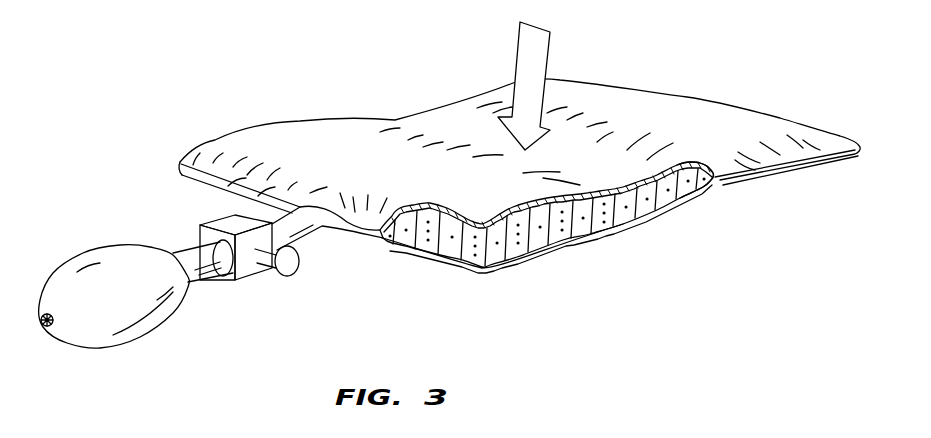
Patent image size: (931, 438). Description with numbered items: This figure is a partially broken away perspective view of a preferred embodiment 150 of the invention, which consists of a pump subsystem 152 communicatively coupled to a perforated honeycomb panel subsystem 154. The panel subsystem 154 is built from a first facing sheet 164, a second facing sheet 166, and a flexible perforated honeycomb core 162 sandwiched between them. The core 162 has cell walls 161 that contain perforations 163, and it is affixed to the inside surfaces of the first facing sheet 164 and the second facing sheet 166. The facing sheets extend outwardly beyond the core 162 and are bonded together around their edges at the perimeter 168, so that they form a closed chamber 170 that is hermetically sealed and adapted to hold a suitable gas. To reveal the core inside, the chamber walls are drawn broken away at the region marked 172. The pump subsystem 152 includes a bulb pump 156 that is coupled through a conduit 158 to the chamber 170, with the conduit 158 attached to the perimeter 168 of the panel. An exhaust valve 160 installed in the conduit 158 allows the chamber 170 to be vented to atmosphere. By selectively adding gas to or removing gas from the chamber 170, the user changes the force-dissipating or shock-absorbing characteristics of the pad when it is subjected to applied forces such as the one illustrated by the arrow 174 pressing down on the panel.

The preferred embodiment 150 is at (443, 205).
The pump subsystem 152 is at (204, 297).
The perforated honeycomb panel subsystem 154 is at (477, 168).
The bulb pump 156 is at (92, 337).
The conduit 158 is at (193, 255).
The exhaust valve 160 is at (252, 265).
The cell walls 161 is at (525, 242).
The flexible perforated honeycomb core 162 is at (560, 227).
The perforations 163 is at (512, 260).
The first facing sheet 164 is at (753, 132).
The second facing sheet 166 is at (781, 180).
The perimeter 168 is at (180, 170).
The closed chamber 170 is at (693, 218).
The broken away chamber walls 172 is at (478, 263).
The arrow 174 is at (548, 52).